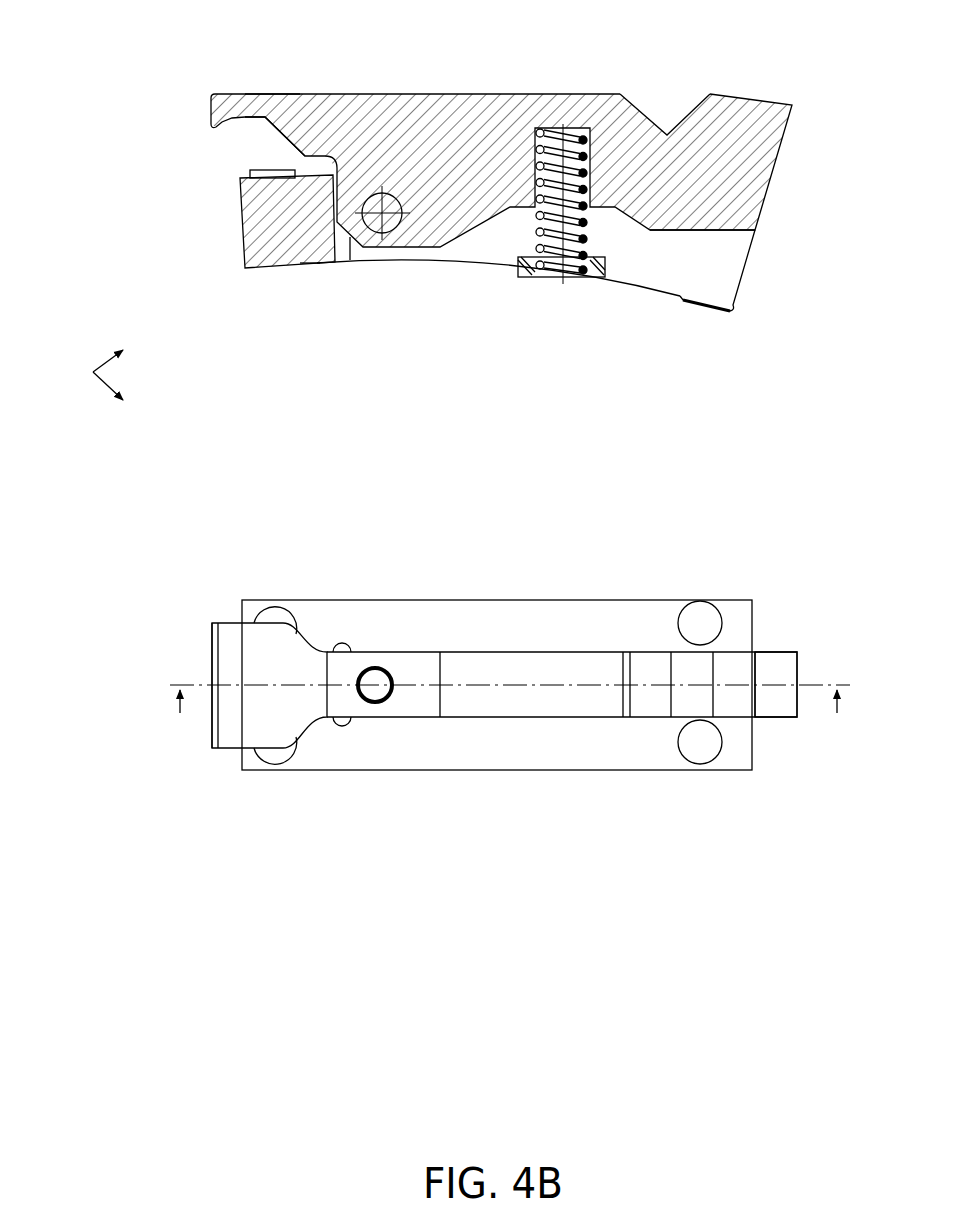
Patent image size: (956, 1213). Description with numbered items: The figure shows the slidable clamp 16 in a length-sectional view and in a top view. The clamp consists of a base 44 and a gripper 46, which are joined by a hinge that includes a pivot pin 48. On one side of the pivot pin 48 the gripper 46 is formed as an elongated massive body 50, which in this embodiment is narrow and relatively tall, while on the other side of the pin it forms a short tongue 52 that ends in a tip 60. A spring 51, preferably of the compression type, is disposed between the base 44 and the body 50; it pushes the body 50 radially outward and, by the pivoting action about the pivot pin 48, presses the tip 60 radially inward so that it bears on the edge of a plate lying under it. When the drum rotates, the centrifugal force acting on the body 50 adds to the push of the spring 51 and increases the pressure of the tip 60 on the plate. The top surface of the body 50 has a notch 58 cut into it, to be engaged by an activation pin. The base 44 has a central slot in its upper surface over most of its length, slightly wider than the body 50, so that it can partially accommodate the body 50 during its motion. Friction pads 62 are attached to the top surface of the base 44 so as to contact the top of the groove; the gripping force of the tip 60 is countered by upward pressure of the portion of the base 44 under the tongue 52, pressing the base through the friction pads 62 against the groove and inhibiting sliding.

The slidable clamp 16 is at (85, 374).
The base 44 is at (702, 270).
The gripper 46 is at (458, 97).
The pivot pin 48 is at (377, 230).
The elongated massive body 50 is at (755, 108).
The spring 51 is at (543, 127).
The tongue 52 is at (247, 100).
The notch 58 is at (647, 100).
The tip 60 is at (213, 95).
The friction pads 62 is at (258, 173).